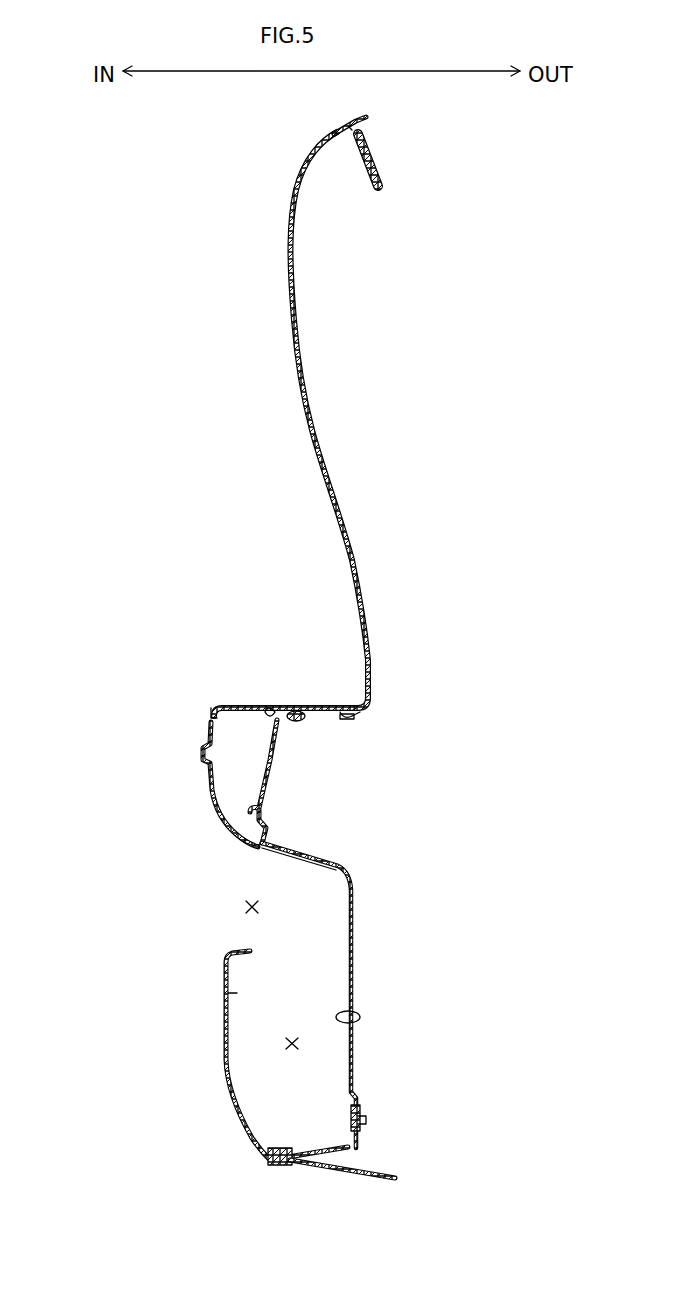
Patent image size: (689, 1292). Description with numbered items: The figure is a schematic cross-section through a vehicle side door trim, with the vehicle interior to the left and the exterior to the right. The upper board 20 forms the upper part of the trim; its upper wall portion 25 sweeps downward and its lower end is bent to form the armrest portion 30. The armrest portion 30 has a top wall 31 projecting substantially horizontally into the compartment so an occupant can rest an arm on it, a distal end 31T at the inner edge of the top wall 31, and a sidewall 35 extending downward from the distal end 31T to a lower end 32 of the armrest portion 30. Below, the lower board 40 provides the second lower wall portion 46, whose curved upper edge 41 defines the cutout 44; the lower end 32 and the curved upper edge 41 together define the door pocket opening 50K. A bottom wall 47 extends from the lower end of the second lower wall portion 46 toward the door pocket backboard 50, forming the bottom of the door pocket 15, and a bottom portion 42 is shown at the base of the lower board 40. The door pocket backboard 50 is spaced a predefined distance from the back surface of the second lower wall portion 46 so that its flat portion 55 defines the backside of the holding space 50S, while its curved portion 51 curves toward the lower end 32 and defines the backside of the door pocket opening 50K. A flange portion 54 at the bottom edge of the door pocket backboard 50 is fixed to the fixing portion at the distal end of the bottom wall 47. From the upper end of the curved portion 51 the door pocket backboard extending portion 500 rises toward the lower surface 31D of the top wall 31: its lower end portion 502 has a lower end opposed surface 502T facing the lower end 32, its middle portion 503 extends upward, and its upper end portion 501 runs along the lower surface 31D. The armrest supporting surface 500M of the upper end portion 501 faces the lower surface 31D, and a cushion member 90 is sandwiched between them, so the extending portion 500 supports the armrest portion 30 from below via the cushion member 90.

The door pocket 15 is at (305, 1002).
The upper board 20 is at (266, 412).
The upper wall portion 25 is at (308, 420).
The armrest portion 30 is at (244, 735).
The top wall 31 is at (258, 705).
The distal end 31T is at (214, 705).
The lower surface 31D is at (345, 716).
The lower end 32 is at (246, 845).
The sidewall 35 is at (203, 768).
The lower board 40 is at (248, 1077).
The curved upper edge 41 is at (236, 953).
The bottom portion 42 is at (254, 1142).
The cutout 44 is at (252, 885).
The second lower wall portion 46 is at (226, 1045).
The bottom wall 47 is at (300, 1156).
The door pocket backboard 50 is at (294, 995).
The door pocket opening 50K is at (250, 907).
The holding space 50S is at (296, 1043).
The curved portion 51 is at (270, 845).
The flange portion 54 is at (360, 1142).
The flat portion 55 is at (360, 1017).
The cushion member 90 is at (272, 705).
The door pocket backboard extending portion 500 is at (336, 793).
The armrest supporting surface 500M is at (292, 723).
The upper end portion 501 is at (300, 722).
The lower end portion 502 is at (266, 828).
The lower end opposed surface 502T is at (312, 862).
The middle portion 503 is at (270, 768).